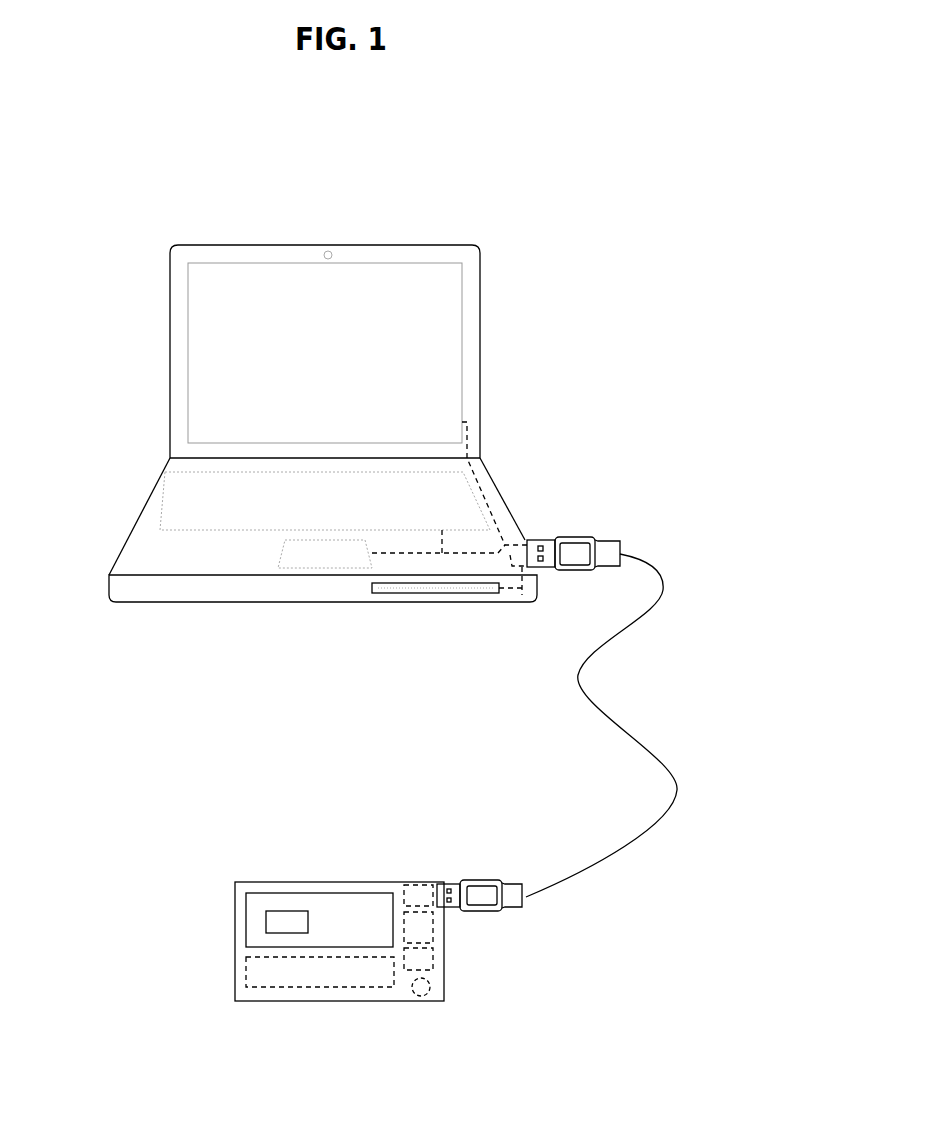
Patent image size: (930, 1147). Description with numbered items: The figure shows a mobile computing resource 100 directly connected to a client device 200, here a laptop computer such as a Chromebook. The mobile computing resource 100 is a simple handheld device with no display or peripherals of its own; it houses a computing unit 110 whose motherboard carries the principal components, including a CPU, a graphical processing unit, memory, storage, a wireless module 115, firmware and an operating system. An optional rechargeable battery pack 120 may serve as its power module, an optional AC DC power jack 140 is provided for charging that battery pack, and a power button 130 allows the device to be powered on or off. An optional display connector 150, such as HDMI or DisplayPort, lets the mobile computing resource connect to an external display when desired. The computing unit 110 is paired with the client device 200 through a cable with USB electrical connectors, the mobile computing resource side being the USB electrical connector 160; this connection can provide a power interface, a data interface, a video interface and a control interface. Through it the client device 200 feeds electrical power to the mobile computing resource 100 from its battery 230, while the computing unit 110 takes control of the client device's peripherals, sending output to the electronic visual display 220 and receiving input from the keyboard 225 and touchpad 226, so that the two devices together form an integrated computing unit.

The mobile computing resource 100 is at (338, 837).
The computing unit 110 is at (308, 903).
The wireless module 115 is at (266, 925).
The battery pack 120 is at (268, 968).
The power button 130 is at (421, 996).
The AC DC power jack 140 is at (428, 970).
The display connector 150 is at (420, 933).
The USB 3.1 electrical connector 160 is at (420, 898).
The client device 200 is at (329, 228).
The electronic visual display 220 is at (250, 305).
The keyboard 225 is at (217, 507).
The touchpad 226 is at (316, 555).
The battery 230 is at (488, 592).